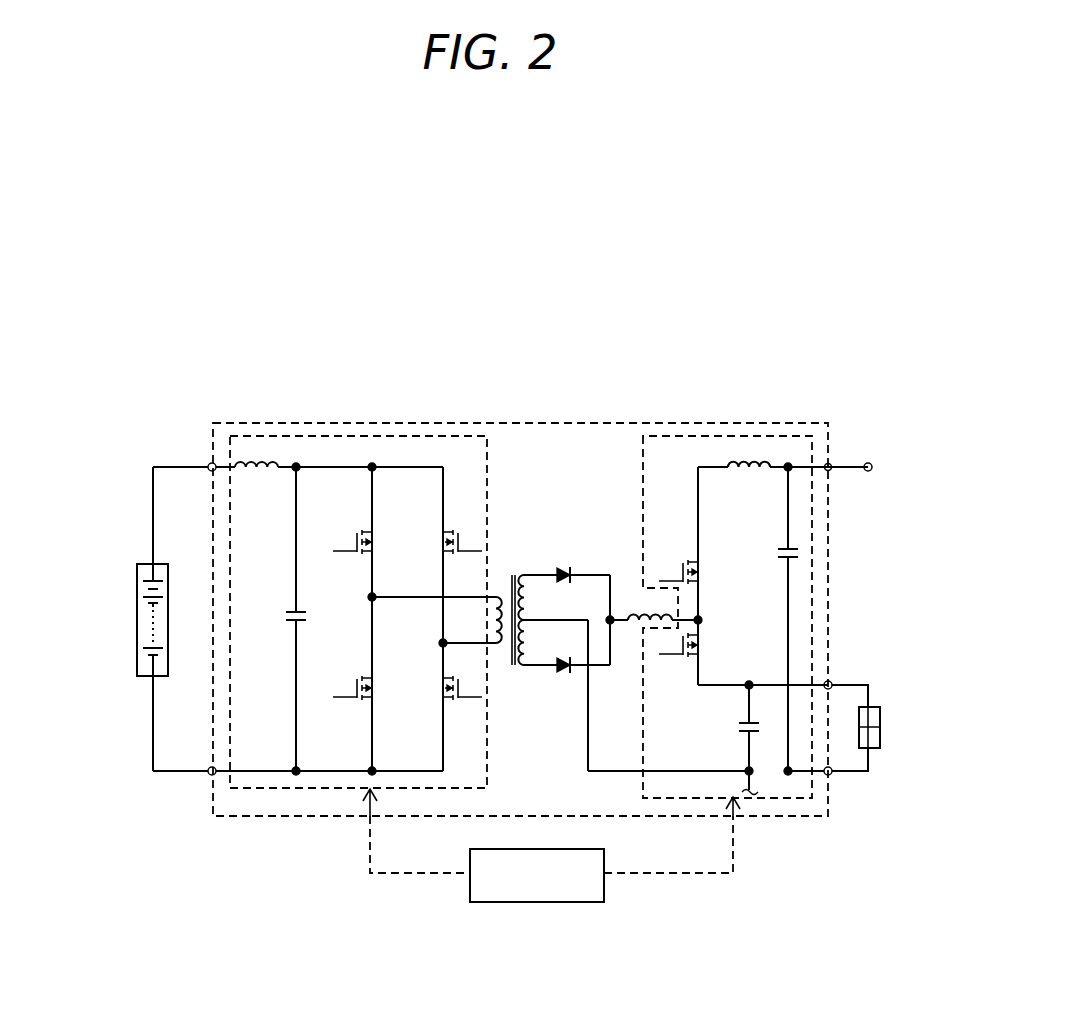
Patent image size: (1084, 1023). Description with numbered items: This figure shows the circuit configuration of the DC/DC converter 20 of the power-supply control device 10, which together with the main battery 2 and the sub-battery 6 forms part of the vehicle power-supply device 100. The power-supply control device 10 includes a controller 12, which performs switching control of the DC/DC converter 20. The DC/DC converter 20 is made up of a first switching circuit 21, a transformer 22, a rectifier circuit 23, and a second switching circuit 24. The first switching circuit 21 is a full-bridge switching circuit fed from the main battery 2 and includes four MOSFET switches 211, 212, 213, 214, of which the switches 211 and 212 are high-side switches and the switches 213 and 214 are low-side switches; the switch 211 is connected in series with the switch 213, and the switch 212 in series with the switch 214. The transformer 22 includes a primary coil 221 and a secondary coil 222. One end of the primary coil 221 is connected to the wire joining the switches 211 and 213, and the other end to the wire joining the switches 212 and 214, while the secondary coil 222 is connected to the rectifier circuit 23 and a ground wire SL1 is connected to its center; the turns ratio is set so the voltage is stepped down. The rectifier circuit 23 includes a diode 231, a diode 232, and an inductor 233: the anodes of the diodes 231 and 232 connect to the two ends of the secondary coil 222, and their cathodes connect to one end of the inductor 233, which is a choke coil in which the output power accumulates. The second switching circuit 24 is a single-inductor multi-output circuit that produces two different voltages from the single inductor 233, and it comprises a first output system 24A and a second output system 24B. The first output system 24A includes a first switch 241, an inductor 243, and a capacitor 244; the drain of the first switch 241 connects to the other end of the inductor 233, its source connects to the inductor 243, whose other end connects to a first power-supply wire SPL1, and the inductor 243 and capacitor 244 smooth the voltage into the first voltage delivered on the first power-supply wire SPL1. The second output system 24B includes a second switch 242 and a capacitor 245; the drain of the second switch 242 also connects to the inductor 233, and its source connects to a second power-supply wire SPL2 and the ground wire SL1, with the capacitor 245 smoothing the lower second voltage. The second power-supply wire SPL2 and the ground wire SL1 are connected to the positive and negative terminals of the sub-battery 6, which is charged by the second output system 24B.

The power-supply device 100 is at (175, 431).
The main battery 2 is at (137, 628).
The power-supply control device 10 is at (602, 397).
The DC/DC converter 20 is at (873, 553).
The first switching circuit 21 is at (328, 429).
The switch 211 is at (352, 546).
The switch 212 is at (449, 547).
The switch 213 is at (352, 694).
The switch 214 is at (450, 692).
The transformer 22 is at (537, 587).
The primary coil 221 is at (503, 590).
The secondary coil 222 is at (521, 668).
The rectifier circuit 23 is at (635, 589).
The diode 231 is at (566, 570).
The diode 232 is at (565, 674).
The inductor 233 is at (636, 603).
The second switching circuit 24 is at (706, 426).
The first switch 241 is at (677, 578).
The second switch 242 is at (672, 658).
The inductor 243 is at (750, 452).
The capacitor 244 is at (799, 552).
The capacitor 245 is at (745, 732).
The first output system 24A is at (824, 465).
The second output system 24B is at (830, 681).
The sub-battery 6 is at (881, 727).
The controller 12 is at (470, 885).
The first power-supply wire SPL1 is at (845, 469).
The second power-supply wire SPL2 is at (850, 683).
The ground wire SL1 is at (611, 772).